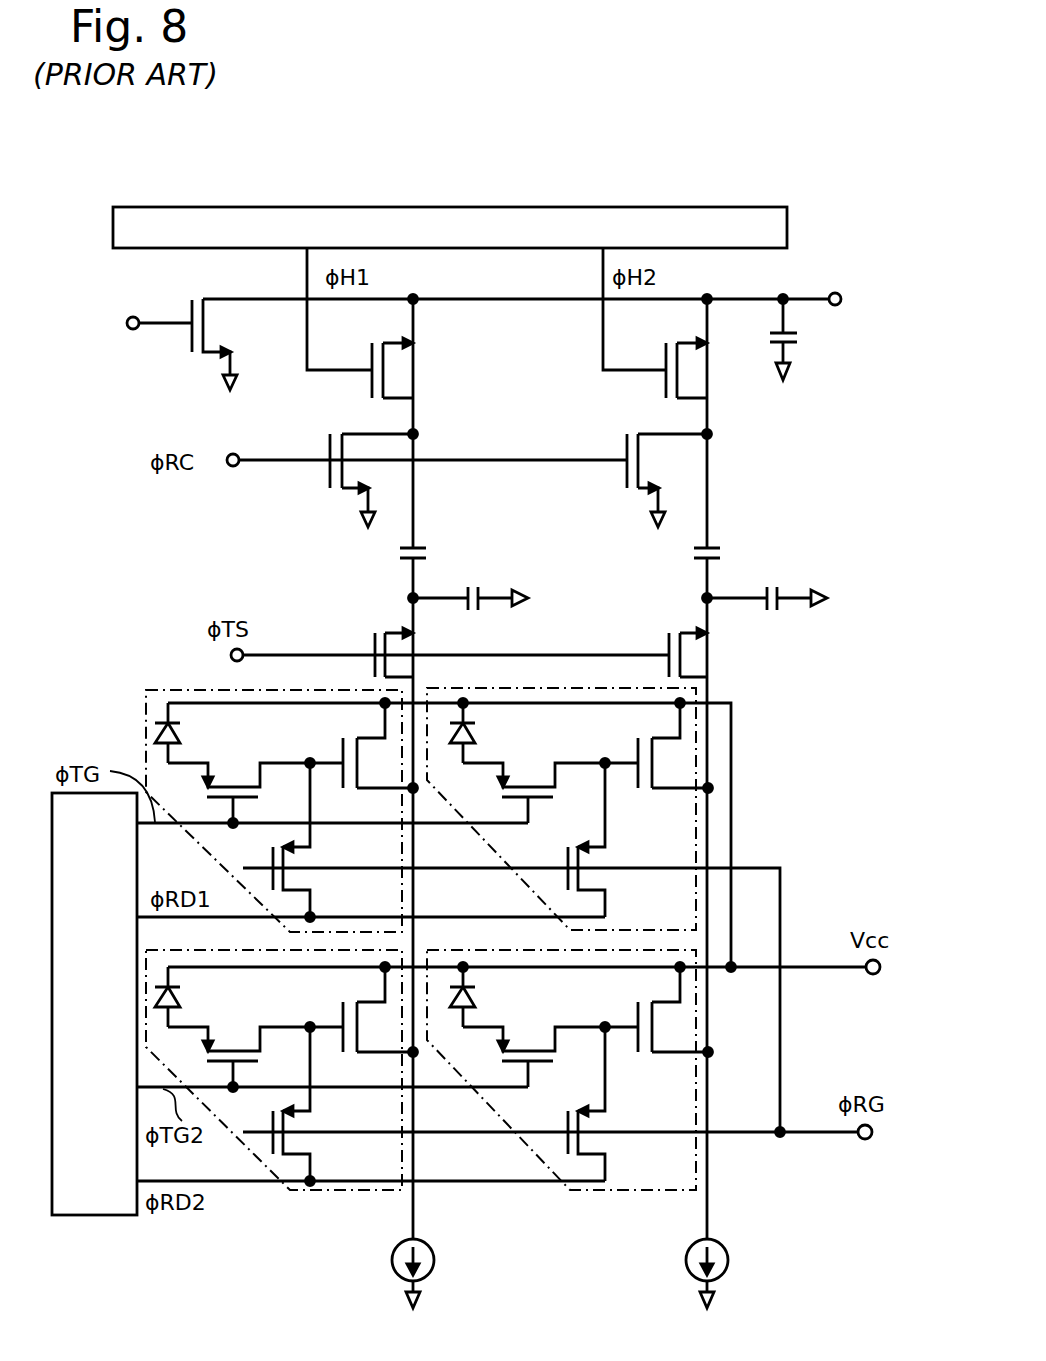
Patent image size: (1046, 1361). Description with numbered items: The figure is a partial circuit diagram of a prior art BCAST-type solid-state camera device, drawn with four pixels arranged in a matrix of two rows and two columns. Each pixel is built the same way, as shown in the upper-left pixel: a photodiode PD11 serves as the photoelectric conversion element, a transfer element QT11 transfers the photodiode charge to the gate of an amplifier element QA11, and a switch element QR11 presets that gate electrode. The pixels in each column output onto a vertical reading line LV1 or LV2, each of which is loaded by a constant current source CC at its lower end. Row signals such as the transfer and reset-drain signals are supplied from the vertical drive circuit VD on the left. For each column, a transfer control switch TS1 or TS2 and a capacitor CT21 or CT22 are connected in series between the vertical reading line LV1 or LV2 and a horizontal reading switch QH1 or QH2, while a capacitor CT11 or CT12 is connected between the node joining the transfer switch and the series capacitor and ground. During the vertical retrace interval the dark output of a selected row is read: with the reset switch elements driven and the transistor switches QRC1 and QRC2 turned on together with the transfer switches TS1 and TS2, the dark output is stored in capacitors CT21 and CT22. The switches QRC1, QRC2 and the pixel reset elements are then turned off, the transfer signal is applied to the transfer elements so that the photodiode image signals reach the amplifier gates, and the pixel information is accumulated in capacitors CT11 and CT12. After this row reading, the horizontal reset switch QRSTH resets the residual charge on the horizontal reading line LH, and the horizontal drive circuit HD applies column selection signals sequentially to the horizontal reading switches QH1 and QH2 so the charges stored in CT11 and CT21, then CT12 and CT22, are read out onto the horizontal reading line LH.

The horizontal drive circuit HD is at (720, 207).
The horizontal reading line LH is at (762, 292).
The horizontal reset switch QRSTH is at (131, 327).
The horizontal reading switch QH1 is at (417, 368).
The horizontal reading switch QH2 is at (712, 368).
The transistor switch QRC1 is at (348, 465).
The transistor switch QRC2 is at (642, 465).
The capacitor CT21 is at (437, 537).
The capacitor CT22 is at (731, 537).
The capacitor CT11 is at (473, 587).
The capacitor CT12 is at (771, 587).
The transfer control switch TS1 is at (371, 642).
The transfer control switch TS2 is at (664, 642).
The vertical reading line LV1 is at (413, 1196).
The vertical reading line LV2 is at (707, 1196).
The vertical drive circuit VD is at (97, 1215).
The photodiode PD11 is at (198, 733).
The transfer element QT11 is at (239, 782).
The amplifier element QA11 is at (361, 746).
The switch element QR11 is at (327, 842).
The constant current source CC is at (577, 1273).